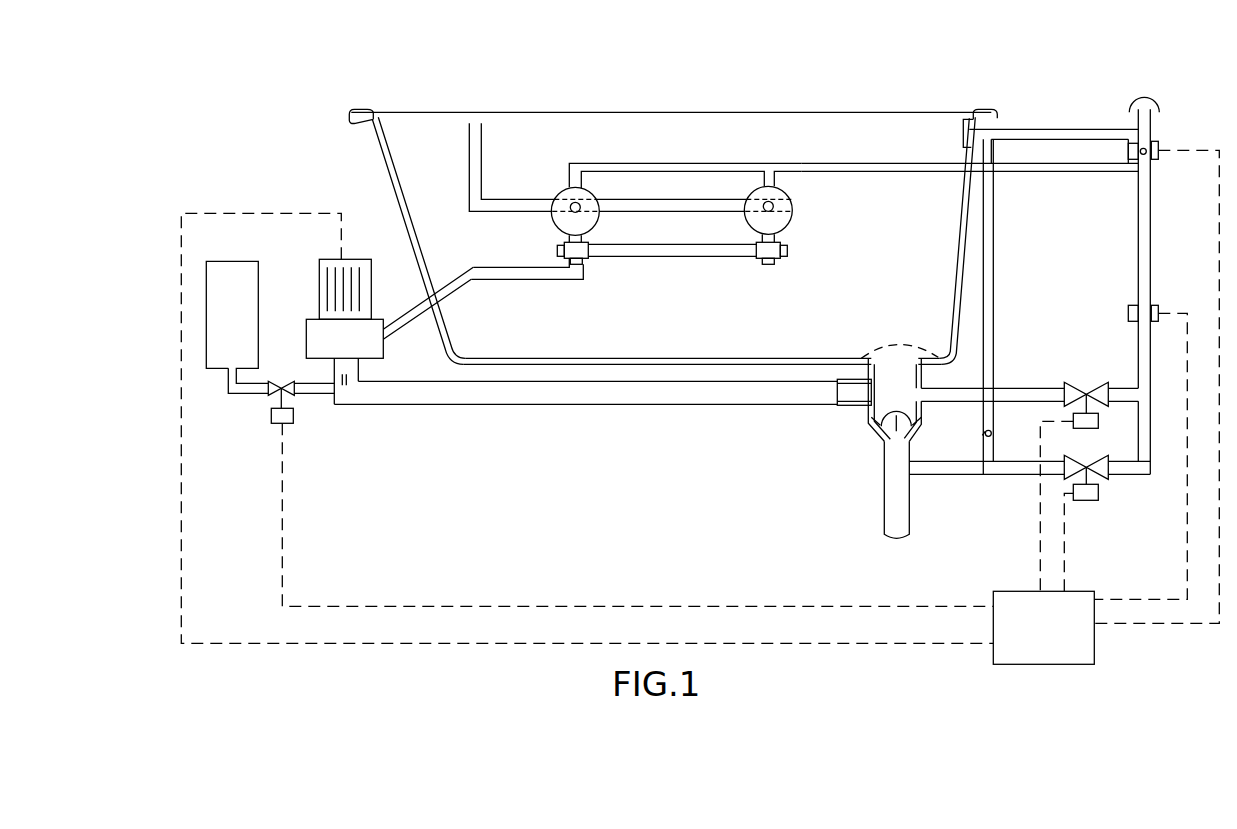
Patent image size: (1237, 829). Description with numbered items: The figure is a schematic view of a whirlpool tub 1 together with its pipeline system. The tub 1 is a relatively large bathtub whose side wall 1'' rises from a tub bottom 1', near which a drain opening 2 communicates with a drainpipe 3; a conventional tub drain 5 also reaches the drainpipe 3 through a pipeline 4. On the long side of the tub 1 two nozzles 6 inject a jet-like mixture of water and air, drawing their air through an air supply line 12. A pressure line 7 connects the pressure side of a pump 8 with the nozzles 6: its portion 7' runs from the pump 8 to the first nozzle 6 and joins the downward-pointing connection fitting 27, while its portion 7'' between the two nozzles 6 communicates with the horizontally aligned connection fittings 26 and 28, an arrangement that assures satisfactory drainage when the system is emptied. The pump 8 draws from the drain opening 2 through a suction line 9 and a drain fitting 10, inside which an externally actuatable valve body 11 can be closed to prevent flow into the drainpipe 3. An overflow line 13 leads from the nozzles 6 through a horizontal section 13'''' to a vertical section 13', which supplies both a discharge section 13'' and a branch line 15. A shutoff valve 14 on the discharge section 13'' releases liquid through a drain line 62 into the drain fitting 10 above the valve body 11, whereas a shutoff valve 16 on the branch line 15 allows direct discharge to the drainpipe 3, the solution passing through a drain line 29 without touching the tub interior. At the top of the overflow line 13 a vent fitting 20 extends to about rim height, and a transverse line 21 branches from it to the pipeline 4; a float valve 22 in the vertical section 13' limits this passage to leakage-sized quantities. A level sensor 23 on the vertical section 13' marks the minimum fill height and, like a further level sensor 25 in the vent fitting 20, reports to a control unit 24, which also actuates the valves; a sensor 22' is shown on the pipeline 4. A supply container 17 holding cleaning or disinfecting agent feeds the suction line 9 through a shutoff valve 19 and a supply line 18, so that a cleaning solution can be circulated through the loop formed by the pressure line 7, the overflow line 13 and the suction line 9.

The whirlpool tub 1 is at (673, 86).
The tub bottom 1' is at (702, 341).
The tub side wall 1'' is at (634, 240).
The drain opening 2 is at (897, 348).
The drainpipe 3 is at (884, 506).
The pipeline 4 is at (992, 291).
The tub drain 5 is at (963, 133).
The nozzles 6 is at (562, 192).
The pressure line 7 is at (495, 303).
The portion of the pressure line 7' is at (527, 255).
The portion of the pressure line 7'' is at (672, 273).
The pump 8 is at (312, 333).
The suction line 9 is at (550, 404).
The drain fitting 10 is at (850, 413).
The valve body 11 is at (885, 430).
The air supply line 12 is at (480, 136).
The overflow line 13 is at (685, 123).
The vertical section 13' is at (1173, 291).
The discharge section 13'' is at (1113, 371).
The line section 13'''' is at (969, 151).
The shutoff valve 14 is at (1083, 385).
The branch line 15 is at (1132, 474).
The shutoff valve 16 is at (1068, 470).
The supply container 17 is at (213, 328).
The supply line 18 is at (344, 388).
The shutoff valve 19 is at (270, 396).
The vent fitting 20 is at (1158, 113).
The transverse line 21 is at (1037, 128).
The float valve 22 is at (1158, 170).
The sensor 22' is at (1005, 426).
The level sensor 23 is at (1127, 312).
The control unit 24 is at (1093, 656).
The level sensor 25 is at (1158, 148).
The connection fitting 26 is at (556, 249).
The connection fitting 27 is at (582, 260).
The connection fitting 28 is at (588, 244).
The drain line 29 is at (934, 474).
The drain line 62 is at (1000, 386).